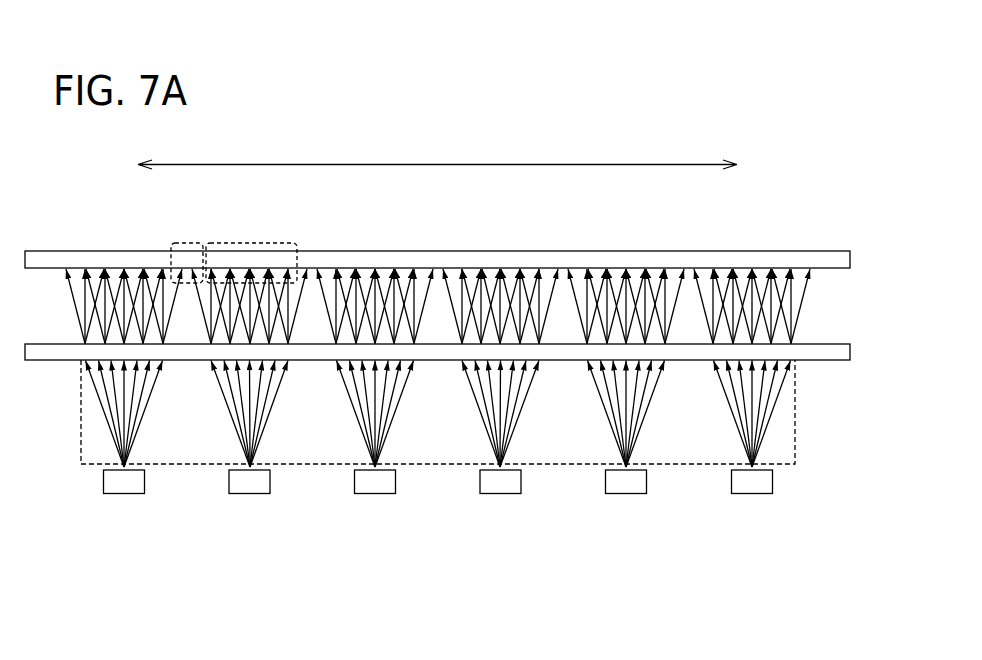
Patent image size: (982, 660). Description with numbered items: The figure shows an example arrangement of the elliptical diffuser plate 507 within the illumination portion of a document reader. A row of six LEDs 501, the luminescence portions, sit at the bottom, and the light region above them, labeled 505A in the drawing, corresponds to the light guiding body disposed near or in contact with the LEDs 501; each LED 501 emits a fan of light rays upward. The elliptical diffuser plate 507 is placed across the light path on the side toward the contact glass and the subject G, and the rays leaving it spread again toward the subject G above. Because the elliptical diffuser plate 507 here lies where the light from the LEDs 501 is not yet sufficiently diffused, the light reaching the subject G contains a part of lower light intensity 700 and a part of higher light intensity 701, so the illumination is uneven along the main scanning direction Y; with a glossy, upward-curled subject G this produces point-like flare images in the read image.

The main scanning direction Y is at (437, 153).
The subject G is at (833, 250).
The elliptical diffuser plate 507 is at (840, 355).
The light source unit 505A is at (795, 420).
The LEDs 501 is at (772, 480).
The part of lower light intensity 700 is at (192, 242).
The part of higher light intensity 701 is at (258, 242).